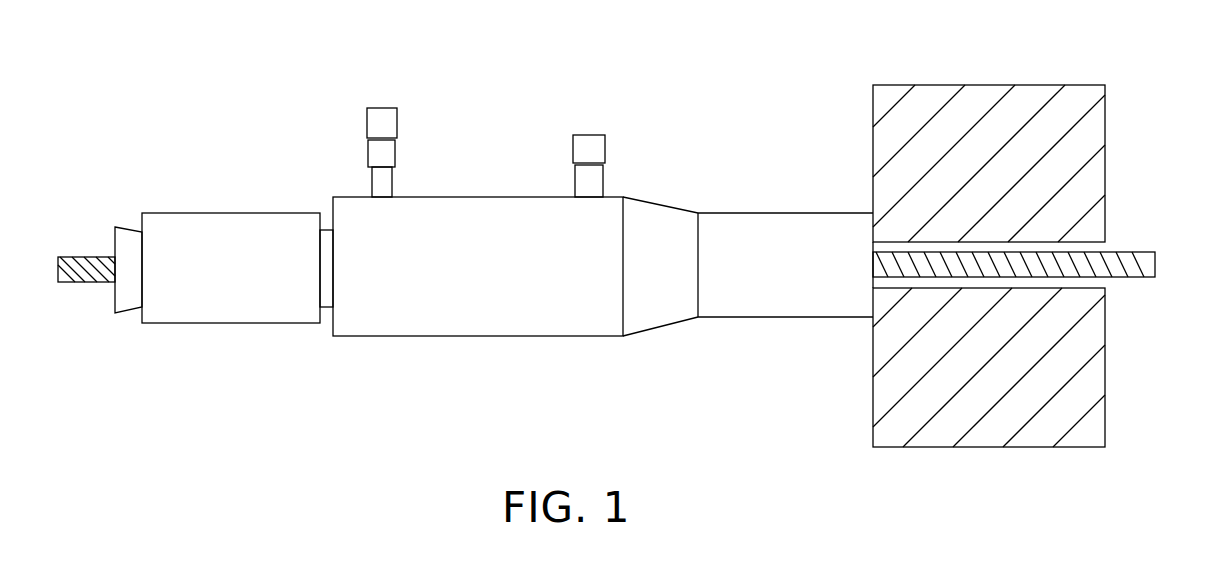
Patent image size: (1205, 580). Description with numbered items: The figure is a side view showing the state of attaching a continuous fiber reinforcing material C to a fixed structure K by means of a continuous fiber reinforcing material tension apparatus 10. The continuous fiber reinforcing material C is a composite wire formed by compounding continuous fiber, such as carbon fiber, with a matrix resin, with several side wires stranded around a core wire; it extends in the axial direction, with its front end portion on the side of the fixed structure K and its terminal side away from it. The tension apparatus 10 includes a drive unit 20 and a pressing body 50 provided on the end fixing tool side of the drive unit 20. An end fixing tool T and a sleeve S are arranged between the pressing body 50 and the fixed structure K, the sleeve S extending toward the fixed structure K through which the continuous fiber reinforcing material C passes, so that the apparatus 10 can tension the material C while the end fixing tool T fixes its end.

The continuous fiber reinforcing material tension apparatus 10 is at (340, 265).
The drive unit 20 is at (572, 336).
The pressing body 50 is at (663, 205).
The sleeve S is at (790, 213).
The end fixing tool T is at (795, 317).
The fixed structure K is at (1000, 85).
The continuous fiber reinforcing material C is at (1133, 252).